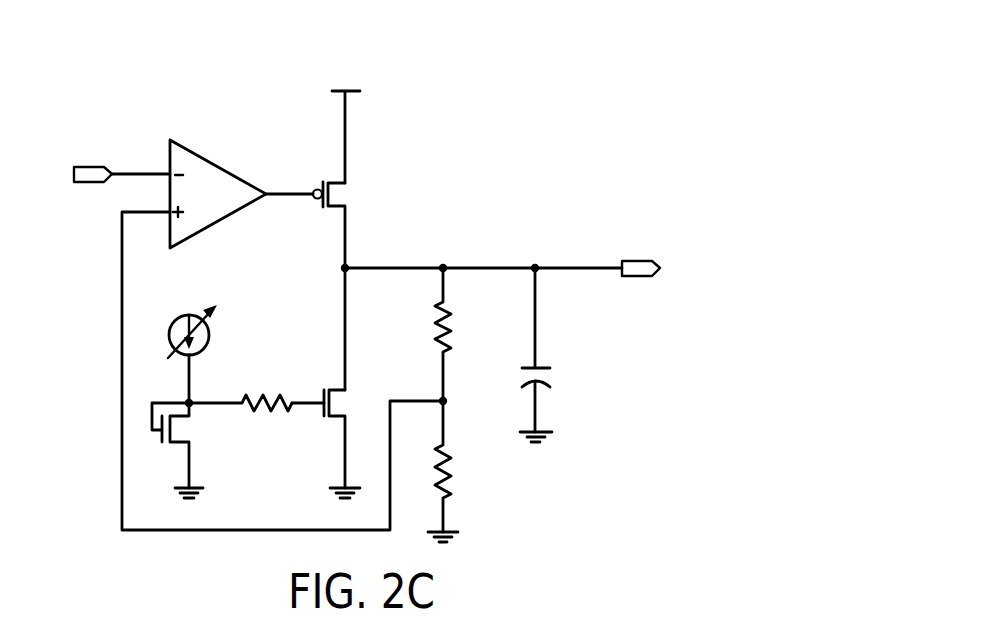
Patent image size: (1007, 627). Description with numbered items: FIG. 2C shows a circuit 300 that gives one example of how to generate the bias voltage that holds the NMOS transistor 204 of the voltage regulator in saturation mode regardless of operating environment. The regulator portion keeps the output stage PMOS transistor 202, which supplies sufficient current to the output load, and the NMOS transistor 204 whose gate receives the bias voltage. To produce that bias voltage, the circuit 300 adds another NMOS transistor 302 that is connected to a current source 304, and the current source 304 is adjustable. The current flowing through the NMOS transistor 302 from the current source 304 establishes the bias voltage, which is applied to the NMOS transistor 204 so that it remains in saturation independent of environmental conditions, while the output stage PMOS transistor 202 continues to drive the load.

The circuit 300 is at (76, 72).
The output stage PMOS transistor 202 is at (350, 193).
The NMOS transistor 204 is at (350, 400).
The NMOS transistor 302 is at (204, 432).
The current source 304 is at (176, 322).